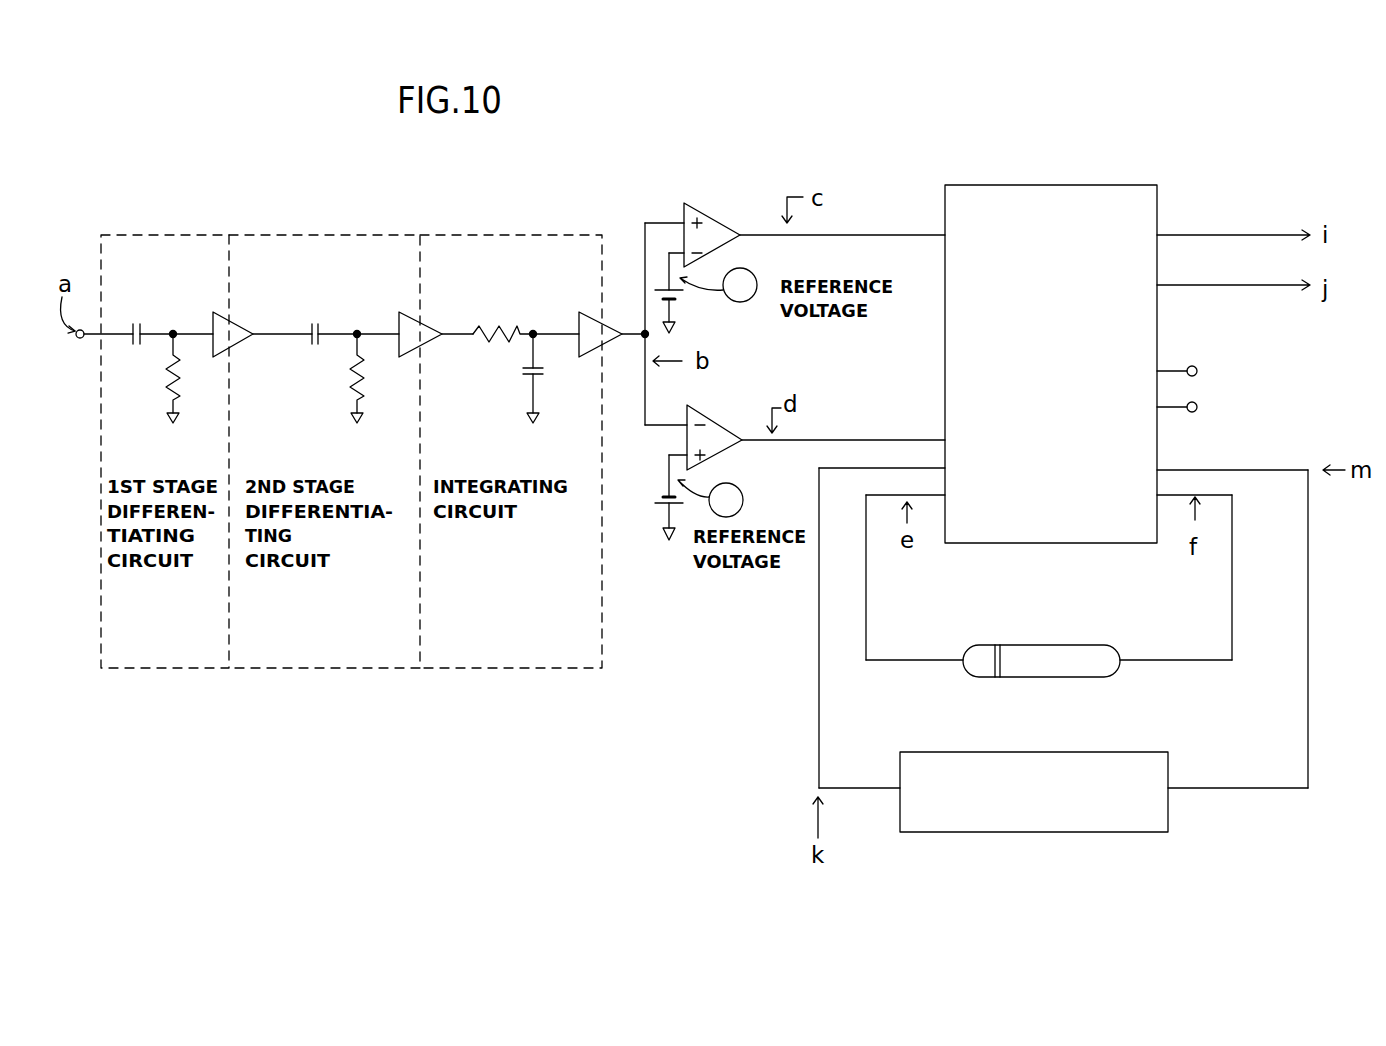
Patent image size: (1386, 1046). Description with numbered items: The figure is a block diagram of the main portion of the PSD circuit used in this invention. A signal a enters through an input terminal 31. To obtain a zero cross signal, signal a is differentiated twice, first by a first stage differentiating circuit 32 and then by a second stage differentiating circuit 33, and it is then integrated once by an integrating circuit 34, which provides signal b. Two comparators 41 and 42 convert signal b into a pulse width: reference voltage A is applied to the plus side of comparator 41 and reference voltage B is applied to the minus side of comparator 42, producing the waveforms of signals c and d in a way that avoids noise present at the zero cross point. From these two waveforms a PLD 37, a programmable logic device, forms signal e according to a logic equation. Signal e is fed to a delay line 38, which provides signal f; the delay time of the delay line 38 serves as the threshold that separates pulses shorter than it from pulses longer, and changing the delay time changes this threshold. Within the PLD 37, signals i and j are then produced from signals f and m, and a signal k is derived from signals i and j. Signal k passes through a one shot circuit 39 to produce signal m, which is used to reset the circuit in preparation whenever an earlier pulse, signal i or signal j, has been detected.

The input terminal 31 is at (80, 340).
The first stage differentiating circuit 32 is at (150, 235).
The second stage differentiating circuit 33 is at (310, 235).
The integrating circuit 34 is at (495, 235).
The PLD (Programmable Logic Device) 37 is at (1100, 185).
The delay line 38 is at (1045, 645).
The one shot circuit 39 is at (1033, 752).
The comparator 41 is at (697, 203).
The comparator 42 is at (665, 542).